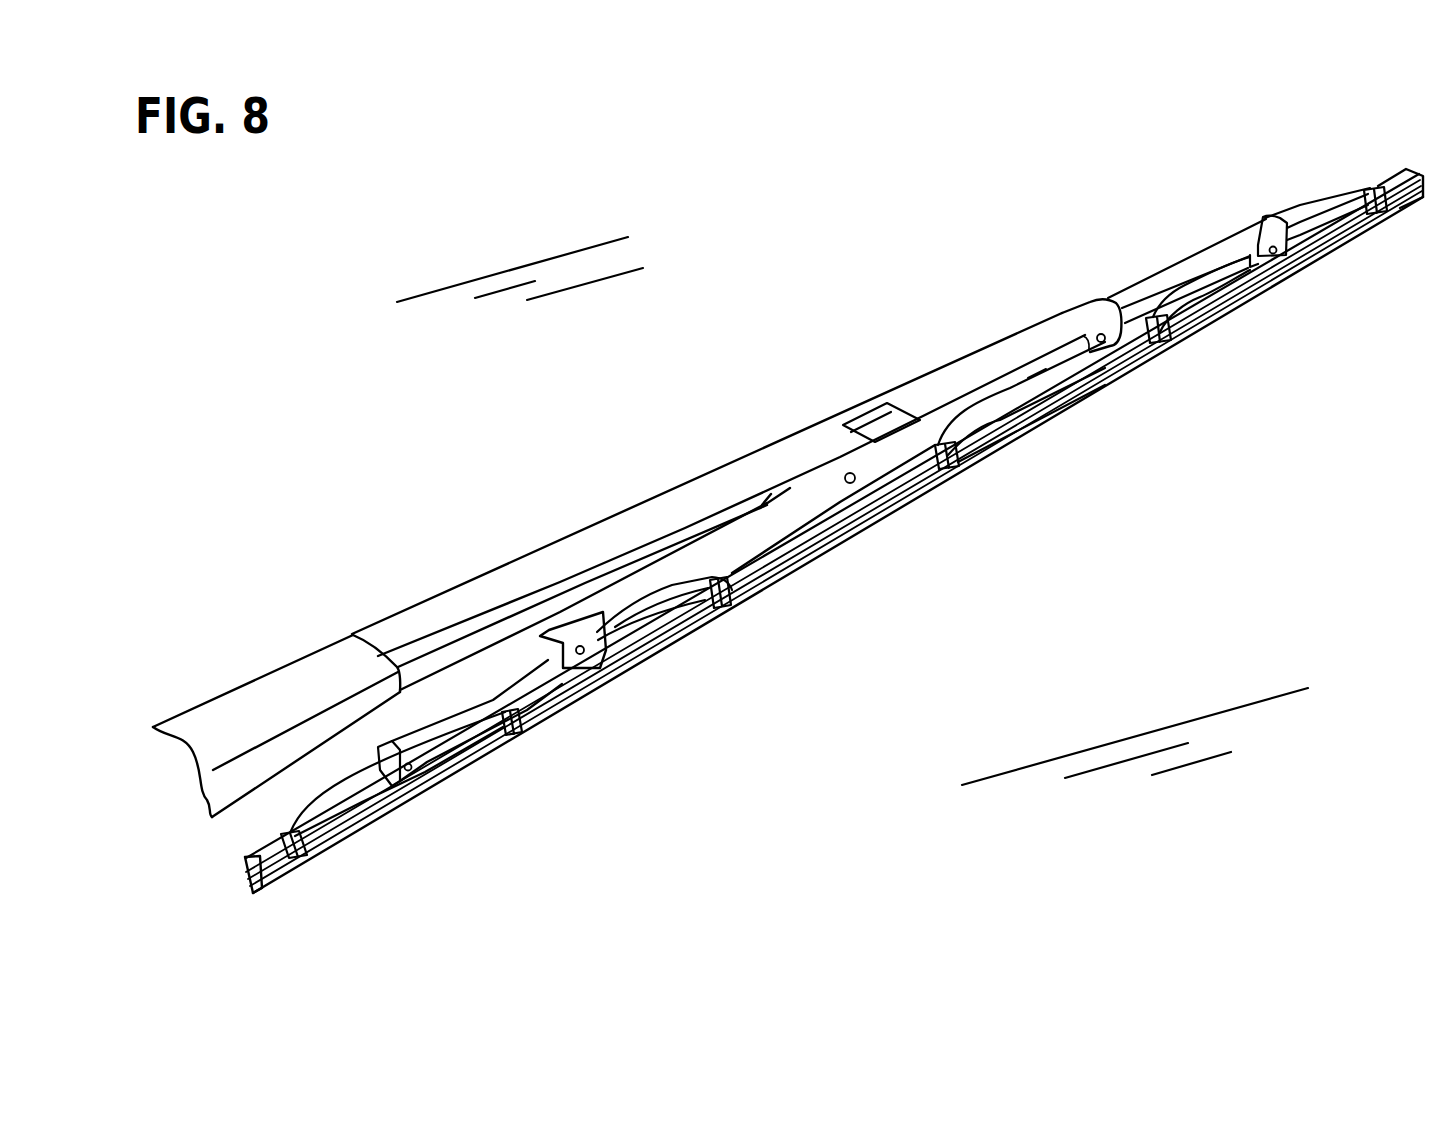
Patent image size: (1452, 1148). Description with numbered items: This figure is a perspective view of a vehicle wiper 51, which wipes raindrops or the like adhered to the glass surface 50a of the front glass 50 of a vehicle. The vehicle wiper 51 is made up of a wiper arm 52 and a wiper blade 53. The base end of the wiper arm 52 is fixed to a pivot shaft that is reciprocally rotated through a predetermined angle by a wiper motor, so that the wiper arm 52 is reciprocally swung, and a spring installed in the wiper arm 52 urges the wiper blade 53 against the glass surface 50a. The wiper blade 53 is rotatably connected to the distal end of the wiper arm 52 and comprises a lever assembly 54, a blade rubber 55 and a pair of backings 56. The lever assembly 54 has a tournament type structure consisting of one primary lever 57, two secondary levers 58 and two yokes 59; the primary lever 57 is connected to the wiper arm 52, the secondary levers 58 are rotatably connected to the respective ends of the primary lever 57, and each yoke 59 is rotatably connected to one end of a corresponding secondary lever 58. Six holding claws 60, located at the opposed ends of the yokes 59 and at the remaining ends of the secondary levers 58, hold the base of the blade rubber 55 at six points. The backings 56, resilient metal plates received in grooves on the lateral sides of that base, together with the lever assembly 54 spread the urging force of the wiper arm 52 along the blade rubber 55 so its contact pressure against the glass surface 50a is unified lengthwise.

The front glass 50 is at (807, 215).
The glass surface 50a is at (1224, 563).
The vehicle wiper 51 is at (453, 393).
The wiper arm 52 is at (427, 618).
The wiper blade 53 is at (962, 360).
The lever assembly 54 is at (1057, 325).
The blade rubber 55 is at (247, 886).
The backings 56 is at (256, 858).
The primary lever 57 is at (805, 508).
The secondary levers 58 is at (543, 670).
The yokes 59 is at (357, 795).
The holding claws 60 is at (304, 857).